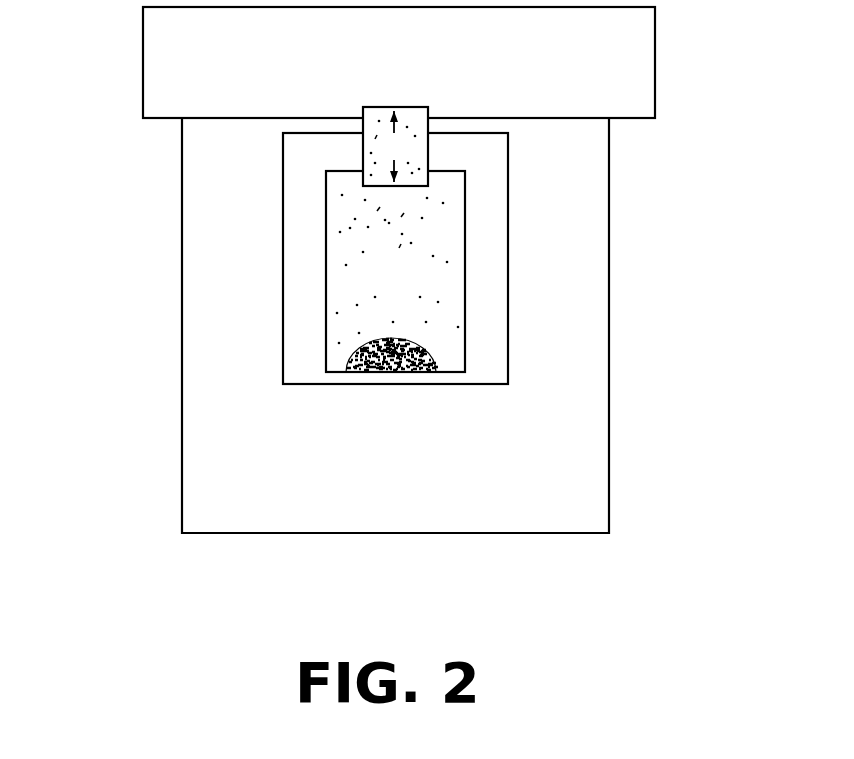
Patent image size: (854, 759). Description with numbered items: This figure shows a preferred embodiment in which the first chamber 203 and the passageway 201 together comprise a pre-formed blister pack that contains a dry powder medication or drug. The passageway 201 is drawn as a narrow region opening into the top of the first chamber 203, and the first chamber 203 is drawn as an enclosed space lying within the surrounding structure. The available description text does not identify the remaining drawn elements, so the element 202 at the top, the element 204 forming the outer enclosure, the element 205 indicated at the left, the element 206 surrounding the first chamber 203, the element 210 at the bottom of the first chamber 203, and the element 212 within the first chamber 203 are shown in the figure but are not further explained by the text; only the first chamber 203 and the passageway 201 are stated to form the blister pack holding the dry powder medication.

The passageway 201 is at (395, 146).
The condensation region / cold plate 202 is at (381, 65).
The first chamber 203 is at (380, 275).
The outer housing wall 204 is at (178, 460).
The thermal insulation region between housings 205 is at (128, 294).
The inner housing / containment vessel 206 is at (477, 252).
The solid or liquid reactant material at bottom of chamber 210 is at (430, 350).
The gas molecules in first gas chamber 212 is at (430, 236).